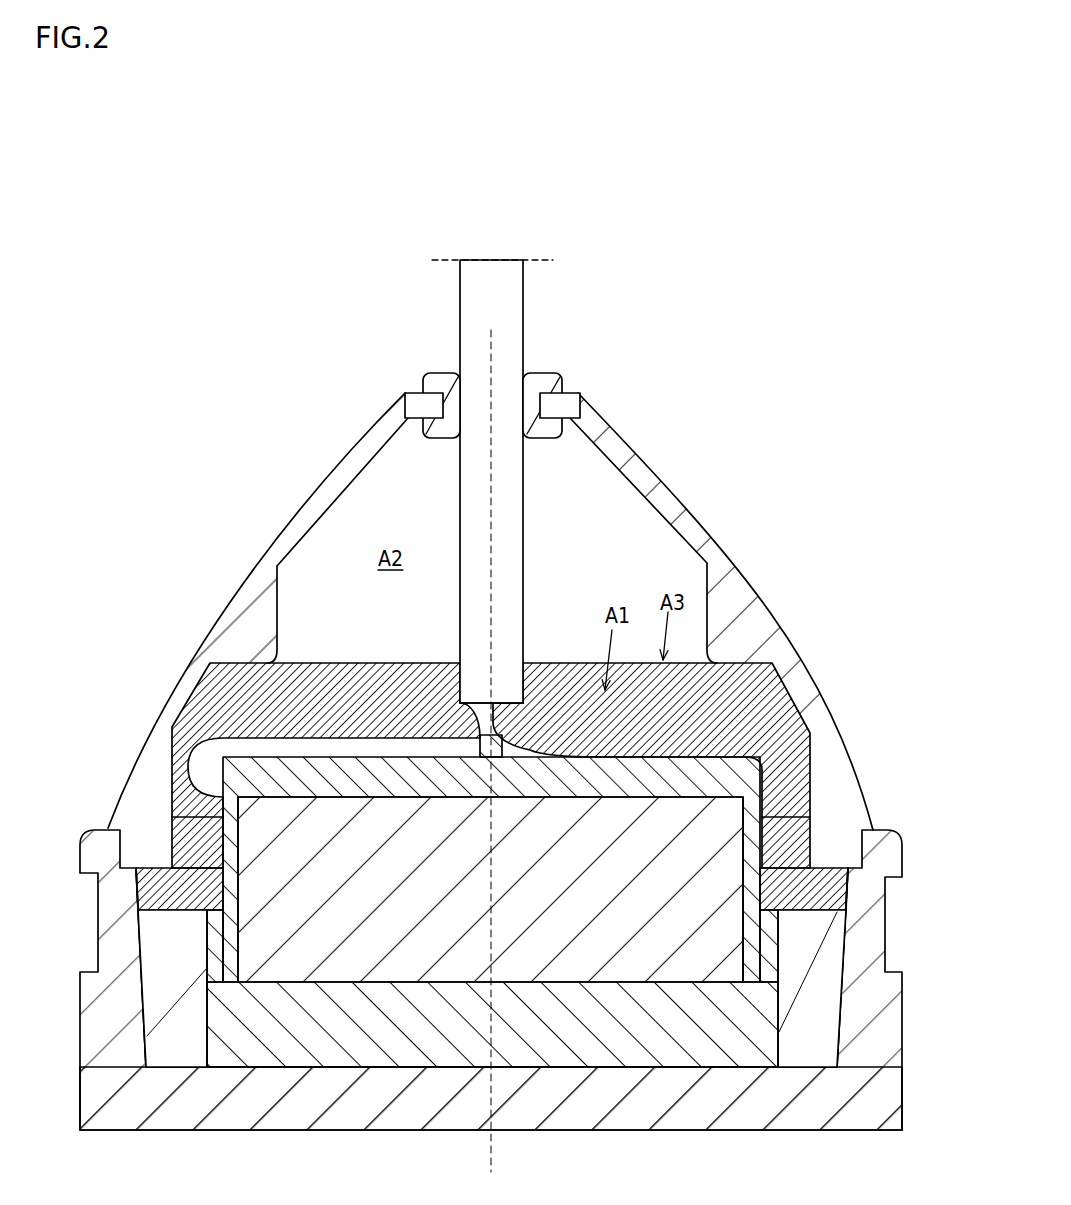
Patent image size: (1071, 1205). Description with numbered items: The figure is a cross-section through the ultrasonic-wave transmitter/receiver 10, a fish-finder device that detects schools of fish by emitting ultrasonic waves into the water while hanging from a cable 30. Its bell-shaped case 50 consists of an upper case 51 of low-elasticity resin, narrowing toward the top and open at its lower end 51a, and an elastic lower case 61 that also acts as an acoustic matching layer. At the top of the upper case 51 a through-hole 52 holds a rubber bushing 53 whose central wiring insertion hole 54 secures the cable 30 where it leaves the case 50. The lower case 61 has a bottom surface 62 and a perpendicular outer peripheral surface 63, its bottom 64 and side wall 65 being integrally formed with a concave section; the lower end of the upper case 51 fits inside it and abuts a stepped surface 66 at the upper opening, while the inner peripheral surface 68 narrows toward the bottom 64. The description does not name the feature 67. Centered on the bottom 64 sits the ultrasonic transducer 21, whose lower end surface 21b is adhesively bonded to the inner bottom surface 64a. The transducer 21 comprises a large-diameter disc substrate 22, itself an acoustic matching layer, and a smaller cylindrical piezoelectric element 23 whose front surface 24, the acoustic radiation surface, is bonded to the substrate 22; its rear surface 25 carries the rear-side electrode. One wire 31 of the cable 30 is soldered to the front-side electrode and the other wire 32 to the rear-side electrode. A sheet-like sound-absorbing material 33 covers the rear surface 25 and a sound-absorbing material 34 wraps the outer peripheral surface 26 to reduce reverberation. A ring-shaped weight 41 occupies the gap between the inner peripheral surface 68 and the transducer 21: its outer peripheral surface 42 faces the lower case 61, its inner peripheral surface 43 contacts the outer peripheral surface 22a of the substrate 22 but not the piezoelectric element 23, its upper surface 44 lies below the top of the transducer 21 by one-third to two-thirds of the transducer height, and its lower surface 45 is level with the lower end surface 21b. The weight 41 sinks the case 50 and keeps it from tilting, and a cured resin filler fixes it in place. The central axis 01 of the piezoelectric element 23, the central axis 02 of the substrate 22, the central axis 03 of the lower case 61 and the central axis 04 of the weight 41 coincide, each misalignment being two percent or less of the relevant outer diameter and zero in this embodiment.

The ultrasonic-wave transmitter/receiver 10 is at (180, 280).
The ultrasonic transducer 21 is at (580, 1067).
The lower end surface 21b is at (640, 1072).
The substrate 22 is at (415, 1050).
The outer peripheral surface 22a is at (785, 1040).
The piezoelectric element 23 is at (675, 965).
The front surface 24 is at (290, 988).
The rear surface 25 is at (427, 785).
The outer peripheral surface 26 is at (233, 836).
The cable 30 is at (512, 297).
The wire 31 is at (535, 740).
The wire 32 is at (290, 720).
The sound-absorbing material 33 is at (250, 772).
The sound-absorbing material 34 is at (228, 843).
The weight 41 is at (845, 932).
The outer peripheral surface 42 is at (848, 962).
The inner peripheral surface 43 is at (775, 958).
The upper surface 44 is at (775, 905).
The lower surface 45 is at (790, 1072).
The case 50 is at (490, 572).
The upper case 51 is at (270, 560).
The lower end 51a is at (143, 873).
The through-hole 52 is at (531, 440).
The bushing 53 is at (550, 385).
The wiring insertion hole 54 is at (465, 385).
The lower case 61 is at (180, 1130).
The bottom surface 62 is at (348, 1133).
The outer peripheral surface 63 is at (80, 1112).
The bottom 64 is at (465, 1125).
The inner bottom surface 64a is at (340, 1058).
The side wall 65 is at (118, 1070).
The stepped surface 66 is at (112, 840).
The recess 67 is at (97, 965).
The inner peripheral surface 68 is at (135, 985).
The central axis 01 is at (493, 830).
The central axis 02 is at (495, 1034).
The central axis 03 is at (495, 1092).
The central axis 04 is at (495, 990).